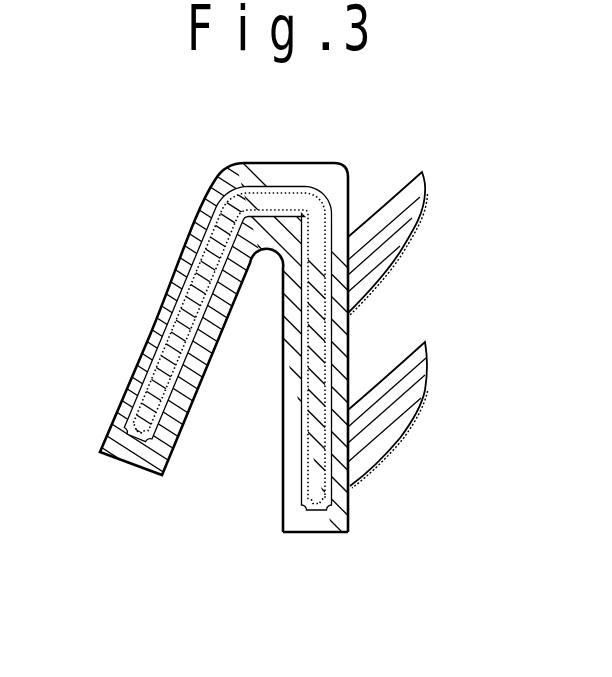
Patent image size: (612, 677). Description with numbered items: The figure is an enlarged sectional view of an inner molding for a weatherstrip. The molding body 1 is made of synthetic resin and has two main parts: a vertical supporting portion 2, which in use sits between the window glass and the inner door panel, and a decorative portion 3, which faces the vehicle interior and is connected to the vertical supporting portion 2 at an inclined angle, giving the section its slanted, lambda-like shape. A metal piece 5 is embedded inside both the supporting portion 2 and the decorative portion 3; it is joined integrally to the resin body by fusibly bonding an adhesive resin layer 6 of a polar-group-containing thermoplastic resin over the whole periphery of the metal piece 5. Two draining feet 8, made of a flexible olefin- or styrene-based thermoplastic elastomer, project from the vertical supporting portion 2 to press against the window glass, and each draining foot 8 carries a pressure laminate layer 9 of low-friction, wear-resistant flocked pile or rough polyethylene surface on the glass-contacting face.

The molding body 1 is at (306, 290).
The vertical supporting portion 2 is at (300, 494).
The decorative portion 3 is at (192, 250).
The metal piece 5 is at (190, 323).
The adhesive layer 6 is at (263, 190).
The draining foot 8 is at (417, 206).
The pressure laminate layer 9 is at (407, 258).